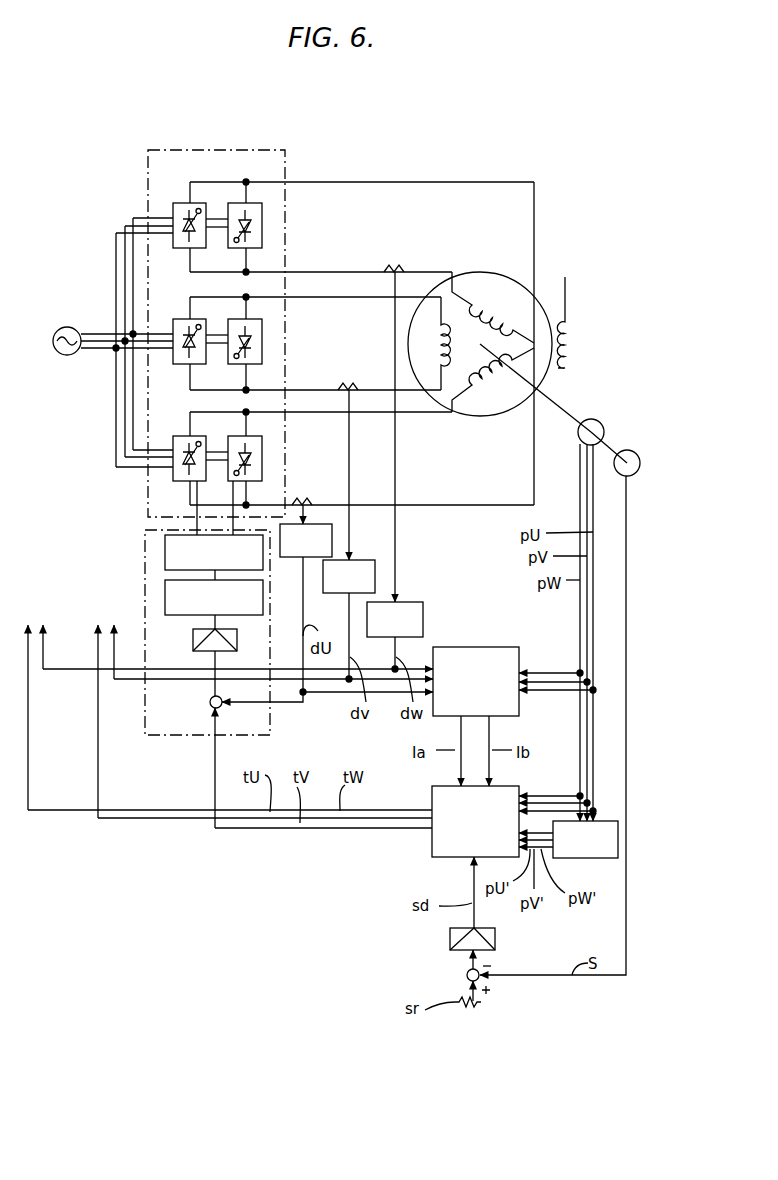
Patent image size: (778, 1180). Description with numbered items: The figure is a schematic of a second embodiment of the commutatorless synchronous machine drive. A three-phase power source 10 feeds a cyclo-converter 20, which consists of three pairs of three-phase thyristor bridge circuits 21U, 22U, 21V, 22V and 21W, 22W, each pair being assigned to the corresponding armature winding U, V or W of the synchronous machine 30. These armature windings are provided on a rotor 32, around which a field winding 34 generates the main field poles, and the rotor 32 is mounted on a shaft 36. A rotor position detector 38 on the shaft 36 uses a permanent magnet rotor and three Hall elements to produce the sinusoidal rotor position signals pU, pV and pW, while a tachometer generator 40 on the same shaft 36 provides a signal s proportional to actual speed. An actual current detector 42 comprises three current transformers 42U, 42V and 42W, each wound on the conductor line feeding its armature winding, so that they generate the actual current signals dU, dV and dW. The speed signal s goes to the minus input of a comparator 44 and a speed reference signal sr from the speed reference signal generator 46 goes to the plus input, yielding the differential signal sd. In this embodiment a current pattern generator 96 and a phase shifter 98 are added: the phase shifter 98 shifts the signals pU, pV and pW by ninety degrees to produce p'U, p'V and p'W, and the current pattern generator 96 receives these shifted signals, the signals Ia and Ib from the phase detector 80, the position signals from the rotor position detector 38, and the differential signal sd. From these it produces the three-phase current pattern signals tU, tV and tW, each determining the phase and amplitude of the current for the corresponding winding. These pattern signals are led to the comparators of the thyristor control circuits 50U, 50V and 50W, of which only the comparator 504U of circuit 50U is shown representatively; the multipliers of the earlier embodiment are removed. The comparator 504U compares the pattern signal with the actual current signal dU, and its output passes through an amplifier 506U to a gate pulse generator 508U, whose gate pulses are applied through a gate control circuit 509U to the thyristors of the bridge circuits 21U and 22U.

The three-phase power source 10 is at (62, 356).
The cyclo-converter 20 is at (187, 150).
The three-phase thyristor bridge circuit 21W is at (184, 203).
The three-phase thyristor bridge circuit 22W is at (236, 248).
The three-phase thyristor bridge circuit 21V is at (181, 319).
The three-phase thyristor bridge circuit 22V is at (231, 364).
The three-phase thyristor bridge circuit 21U is at (181, 436).
The three-phase thyristor bridge circuit 22U is at (232, 481).
The commutatorless synchronous machine 30 is at (493, 254).
The rotor 32 is at (489, 417).
The field winding 34 is at (571, 344).
The shaft 36 is at (561, 406).
The rotor position detector 38 is at (603, 422).
The tachometer generator 40 is at (640, 465).
The actual current detector 42 is at (457, 571).
The current transformer 42U is at (322, 524).
The current transformer 42V is at (362, 560).
The current transformer 42W is at (412, 602).
The comparator 44 is at (466, 975).
The speed reference signal generator 46 is at (496, 940).
The thyristor control circuit 50U is at (146, 544).
The thyristor control circuit 50V is at (121, 620).
The thyristor control circuit 50W is at (56, 620).
The comparator 504U is at (209, 708).
The amplifier 506U is at (192, 643).
The gate pulse generator 508U is at (166, 598).
The gate control circuit 509U is at (166, 548).
The phase detector 80 is at (507, 647).
The current pattern generator 96 is at (432, 851).
The phase shifter 98 is at (618, 858).